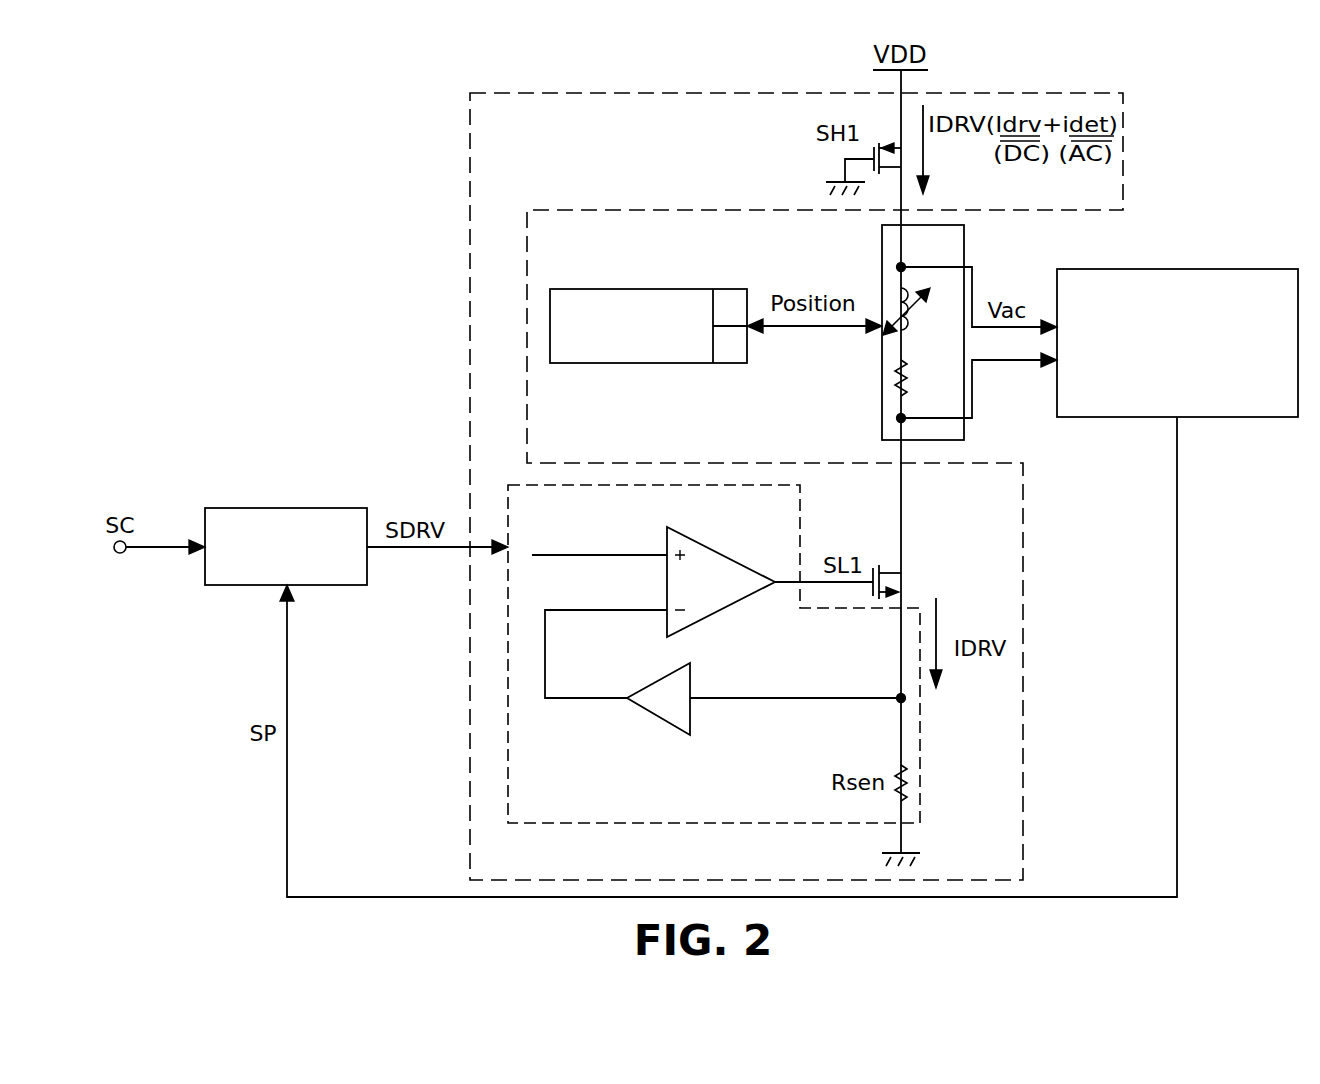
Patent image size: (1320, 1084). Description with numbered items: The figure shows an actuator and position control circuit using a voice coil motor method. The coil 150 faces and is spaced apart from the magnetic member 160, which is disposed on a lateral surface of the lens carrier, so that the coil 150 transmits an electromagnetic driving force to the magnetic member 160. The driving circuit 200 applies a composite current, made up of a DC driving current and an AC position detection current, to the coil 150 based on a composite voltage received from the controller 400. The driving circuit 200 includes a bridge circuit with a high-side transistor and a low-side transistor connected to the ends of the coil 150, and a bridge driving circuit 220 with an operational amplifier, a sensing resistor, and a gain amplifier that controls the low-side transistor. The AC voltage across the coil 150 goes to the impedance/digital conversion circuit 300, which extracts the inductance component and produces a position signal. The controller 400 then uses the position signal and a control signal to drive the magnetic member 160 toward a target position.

The coil 150 is at (965, 255).
The magnetic member 160 is at (641, 289).
The driving circuit 200 is at (470, 298).
The driving signal generator 220 is at (508, 697).
The impedance/digital conversion circuit 300 is at (1177, 269).
The controller 400 is at (285, 508).